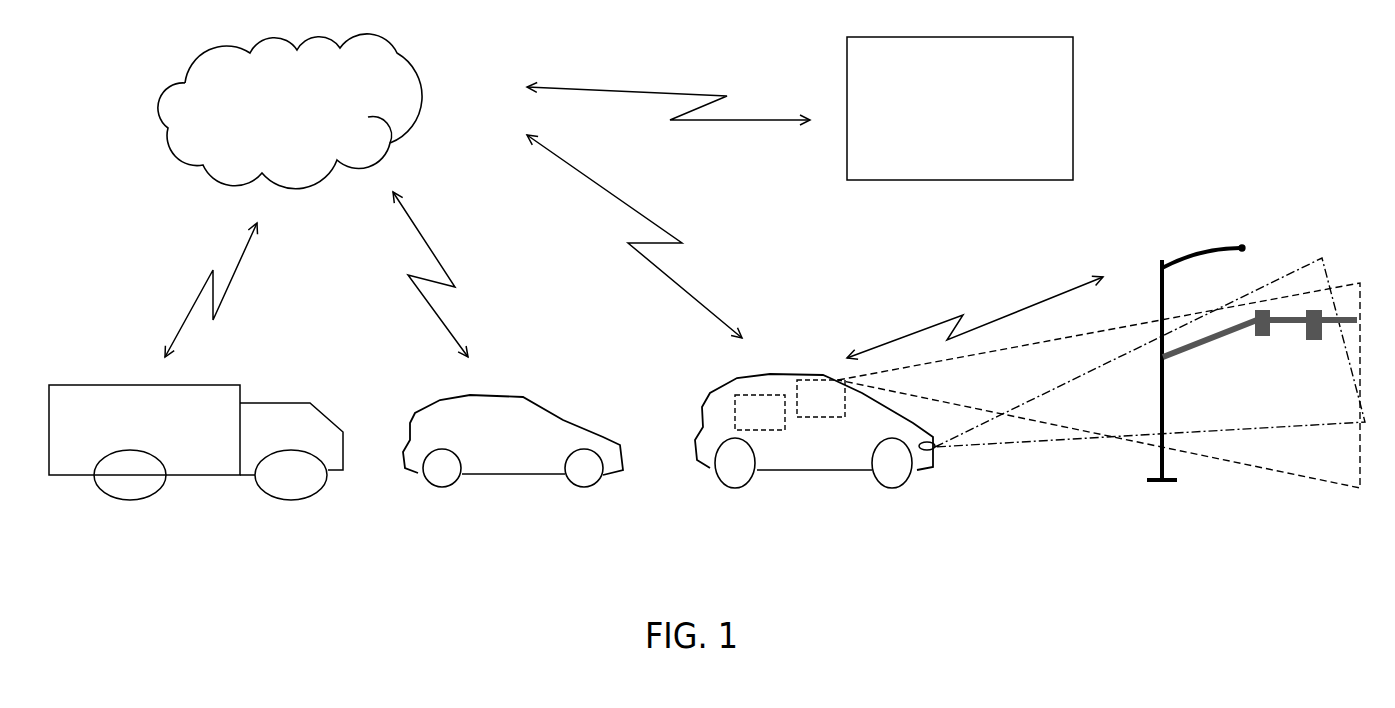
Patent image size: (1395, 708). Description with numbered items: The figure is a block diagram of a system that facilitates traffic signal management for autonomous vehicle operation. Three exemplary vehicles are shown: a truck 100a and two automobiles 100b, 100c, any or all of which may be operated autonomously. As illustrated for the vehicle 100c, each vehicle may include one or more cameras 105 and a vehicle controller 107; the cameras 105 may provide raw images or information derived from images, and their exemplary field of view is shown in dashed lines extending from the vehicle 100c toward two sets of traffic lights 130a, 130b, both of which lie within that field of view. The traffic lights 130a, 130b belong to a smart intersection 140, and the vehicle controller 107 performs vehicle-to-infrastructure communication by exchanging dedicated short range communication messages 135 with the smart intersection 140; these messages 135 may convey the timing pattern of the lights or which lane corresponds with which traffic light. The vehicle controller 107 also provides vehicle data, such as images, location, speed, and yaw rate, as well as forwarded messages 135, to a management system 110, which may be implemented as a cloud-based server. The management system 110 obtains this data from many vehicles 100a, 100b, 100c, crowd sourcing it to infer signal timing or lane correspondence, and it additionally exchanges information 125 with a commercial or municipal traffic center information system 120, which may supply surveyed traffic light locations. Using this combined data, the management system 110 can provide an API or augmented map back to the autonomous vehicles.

The management system 110 is at (314, 131).
The traffic center information system 120 is at (980, 128).
The information 125 is at (668, 94).
The vehicle 100a is at (203, 476).
The vehicle 100b is at (510, 478).
The vehicle 100c is at (777, 473).
The camera 105 is at (973, 463).
The vehicle controller 107 is at (760, 412).
The traffic lights 130a is at (1271, 300).
The traffic lights 130b is at (1318, 298).
The DSRC messages 135 is at (975, 317).
The smart intersection 140 is at (1161, 249).